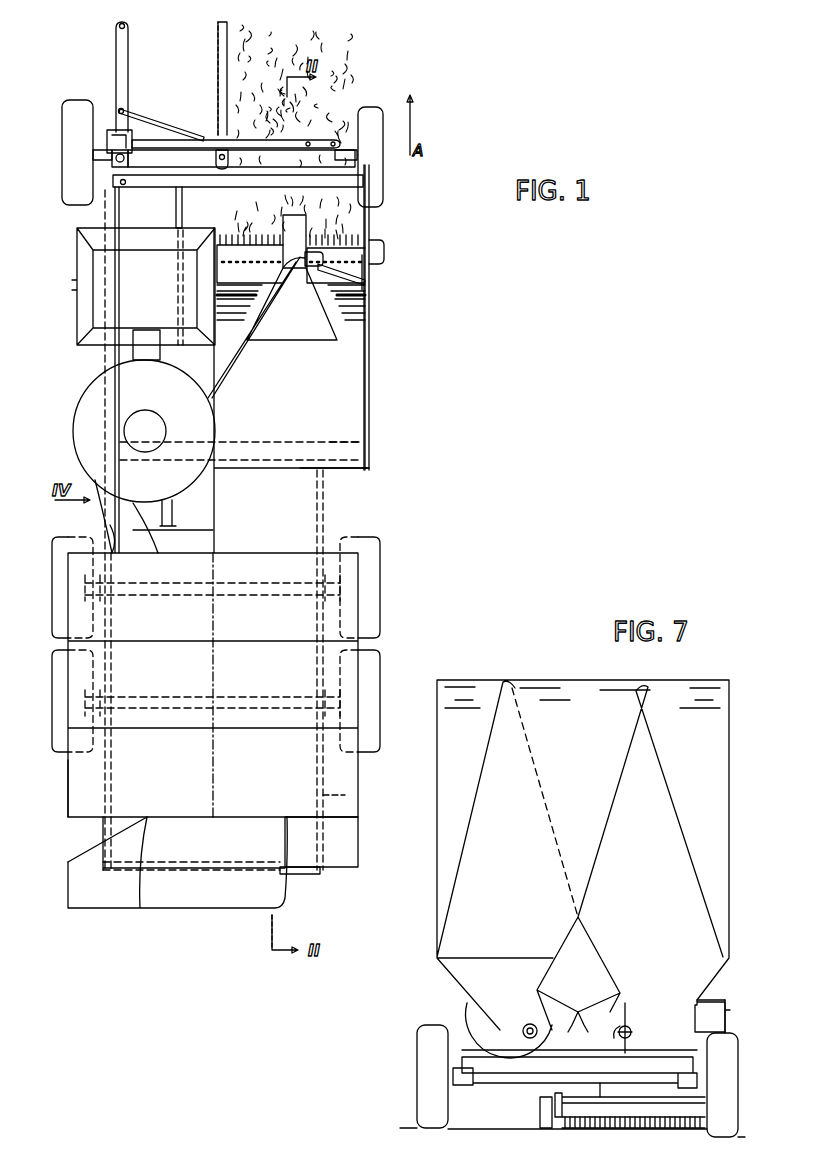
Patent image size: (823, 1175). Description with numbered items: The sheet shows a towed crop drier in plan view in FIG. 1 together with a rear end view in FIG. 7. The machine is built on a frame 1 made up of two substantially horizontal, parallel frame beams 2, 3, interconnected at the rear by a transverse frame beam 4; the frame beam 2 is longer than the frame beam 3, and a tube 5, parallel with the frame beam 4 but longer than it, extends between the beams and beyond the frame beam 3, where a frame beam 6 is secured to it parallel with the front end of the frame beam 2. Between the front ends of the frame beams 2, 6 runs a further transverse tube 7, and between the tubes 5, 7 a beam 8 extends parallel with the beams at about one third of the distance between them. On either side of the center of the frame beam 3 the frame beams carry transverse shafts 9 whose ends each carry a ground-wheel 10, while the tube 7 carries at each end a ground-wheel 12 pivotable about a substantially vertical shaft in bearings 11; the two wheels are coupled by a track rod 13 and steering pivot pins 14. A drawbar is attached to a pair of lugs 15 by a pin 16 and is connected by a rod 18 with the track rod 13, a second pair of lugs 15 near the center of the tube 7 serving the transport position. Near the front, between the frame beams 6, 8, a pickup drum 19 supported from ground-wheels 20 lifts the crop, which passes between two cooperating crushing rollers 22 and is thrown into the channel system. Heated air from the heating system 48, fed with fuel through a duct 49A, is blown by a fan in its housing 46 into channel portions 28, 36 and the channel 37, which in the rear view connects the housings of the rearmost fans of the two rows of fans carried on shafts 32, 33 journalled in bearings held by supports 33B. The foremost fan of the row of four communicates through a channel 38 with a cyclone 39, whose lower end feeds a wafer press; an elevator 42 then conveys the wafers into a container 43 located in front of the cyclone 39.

In FIG. 1, the frame 1 is at (314, 876).
In FIG. 1, the frame beam 2 is at (100, 833).
In FIG. 1, the frame beam 3 is at (345, 796).
In FIG. 1, the frame beam 4 is at (290, 870).
In FIG. 7, the frame beam 4 is at (483, 1074).
In FIG. 1, the tube 5 is at (371, 436).
In FIG. 1, the frame beam 6 is at (372, 396).
In FIG. 7, the frame beam 6 is at (728, 1020).
In FIG. 1, the tube 7 is at (150, 188).
In FIG. 7, the tube 7 is at (704, 999).
In FIG. 1, the beam 8 is at (184, 206).
In FIG. 1, the shafts 9 is at (226, 598).
In FIG. 1, the ground-wheel 10 is at (379, 642).
In FIG. 7, the ground-wheel 10 is at (404, 1062).
In FIG. 1, the bearings 11 is at (216, 35).
In FIG. 1, the ground-wheel 12 is at (86, 104).
In FIG. 1, the track rod 13 is at (204, 137).
In FIG. 1, the steering pivot pins 14 is at (364, 116).
In FIG. 1, the lugs 15 is at (216, 158).
In FIG. 1, the pin 16 is at (128, 158).
In FIG. 1, the rod 18 is at (140, 114).
In FIG. 1, the pickup drum 19 is at (370, 248).
In FIG. 1, the ground-wheels 20 is at (366, 266).
In FIG. 7, the ground-wheels 20 is at (539, 1120).
In FIG. 1, the crushing rollers 22 is at (354, 315).
In FIG. 1, the channel portions 28 is at (354, 436).
In FIG. 7, the shaft 32 is at (631, 1032).
In FIG. 1, the shaft 33 is at (174, 506).
In FIG. 7, the shaft 33 is at (524, 1024).
In FIG. 7, the supports 33B is at (622, 1034).
In FIG. 1, the channel portion 36 is at (70, 792).
In FIG. 1, the channel 37 is at (196, 910).
In FIG. 7, the channel 37 is at (551, 686).
In FIG. 1, the channel 38 is at (106, 518).
In FIG. 1, the cyclone 39 is at (88, 396).
In FIG. 1, the elevator 42 is at (132, 360).
In FIG. 1, the container 43 is at (129, 286).
In FIG. 1, the housing 46 is at (244, 207).
In FIG. 1, the heating system 48 is at (369, 282).
In FIG. 1, the duct 49A is at (230, 378).